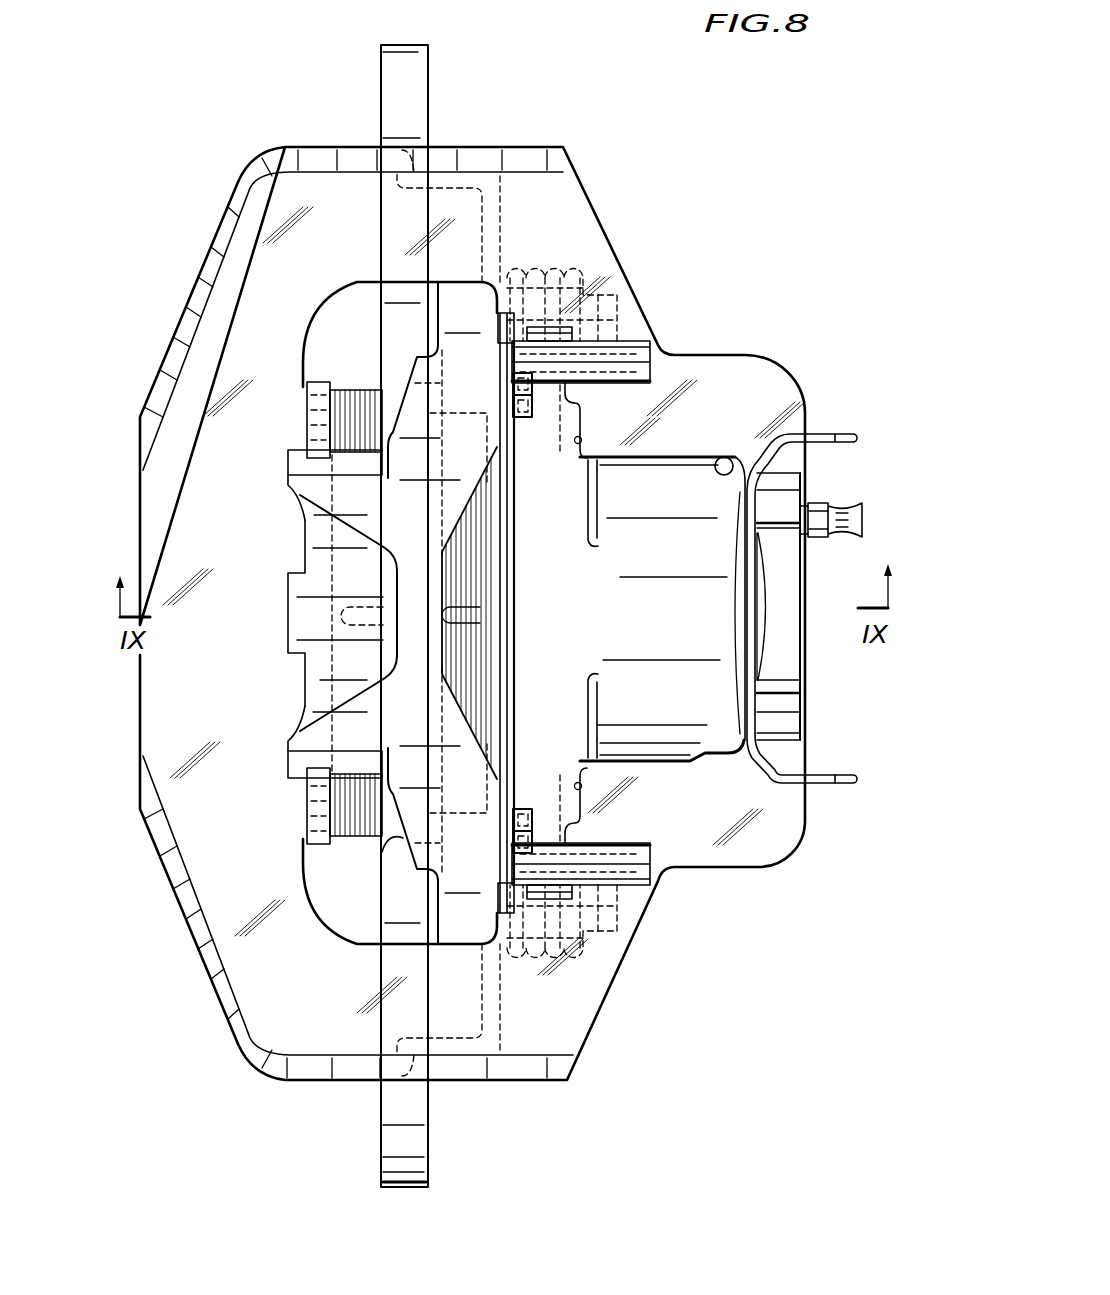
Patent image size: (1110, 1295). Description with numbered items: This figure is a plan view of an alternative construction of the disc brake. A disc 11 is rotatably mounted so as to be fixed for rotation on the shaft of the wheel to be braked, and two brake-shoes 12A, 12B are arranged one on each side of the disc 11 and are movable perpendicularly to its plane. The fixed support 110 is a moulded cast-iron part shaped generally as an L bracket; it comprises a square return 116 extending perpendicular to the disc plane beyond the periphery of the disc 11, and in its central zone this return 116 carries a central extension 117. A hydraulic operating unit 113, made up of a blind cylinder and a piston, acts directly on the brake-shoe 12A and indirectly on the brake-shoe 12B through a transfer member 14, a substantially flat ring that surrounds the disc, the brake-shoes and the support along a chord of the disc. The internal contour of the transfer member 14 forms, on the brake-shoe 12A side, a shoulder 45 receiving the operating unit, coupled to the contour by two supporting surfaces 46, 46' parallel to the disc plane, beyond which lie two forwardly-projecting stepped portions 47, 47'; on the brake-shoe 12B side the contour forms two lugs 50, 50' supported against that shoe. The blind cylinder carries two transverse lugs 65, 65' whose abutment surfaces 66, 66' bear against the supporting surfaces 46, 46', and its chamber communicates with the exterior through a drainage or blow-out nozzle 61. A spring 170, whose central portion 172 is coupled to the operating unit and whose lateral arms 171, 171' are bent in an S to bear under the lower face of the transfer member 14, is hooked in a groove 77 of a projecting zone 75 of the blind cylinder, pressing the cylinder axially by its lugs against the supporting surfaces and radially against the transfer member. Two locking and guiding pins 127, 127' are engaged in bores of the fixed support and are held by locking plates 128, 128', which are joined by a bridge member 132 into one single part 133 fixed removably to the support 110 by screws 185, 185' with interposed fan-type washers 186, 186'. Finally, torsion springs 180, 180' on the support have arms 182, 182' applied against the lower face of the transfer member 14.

The transfer member 14 is at (337, 146).
The disc 11 is at (380, 1123).
The brake-shoe 12B is at (354, 376).
The brake-shoe 12A is at (495, 600).
The arm of torsion spring 182 is at (448, 197).
The arm of torsion spring 182' is at (463, 1054).
The lug 50 is at (321, 393).
The lug 50' is at (310, 810).
The square return 116 is at (316, 573).
The central extension 117 is at (312, 532).
The bridge member 132 is at (516, 650).
The single part 133 is at (530, 565).
The locking and guiding pin 127 is at (609, 343).
The locking and guiding pin 127' is at (613, 890).
The locking plate 128 is at (520, 281).
The locking plate 128' is at (531, 953).
The transverse lug 65 is at (598, 302).
The transverse lug 65' is at (599, 929).
The torsion spring 180 is at (580, 280).
The torsion spring 180' is at (582, 952).
The fan-type washer 186 is at (487, 377).
The screw 185 is at (487, 402).
The fan-type washer 186' is at (493, 845).
The screw 185' is at (493, 848).
The abutment surface 66 is at (604, 420).
The supporting surface 46 is at (610, 429).
The stepped portion 47 is at (545, 444).
The abutment surface 66' is at (610, 805).
The supporting surface 46' is at (616, 783).
The stepped portion 47' is at (557, 799).
The hydraulic operating unit 113 is at (689, 447).
The shoulder 45 is at (722, 458).
The spring 170 is at (817, 592).
The lateral arm 171 is at (830, 402).
The lateral arm 171' is at (850, 811).
The projecting zone 75 is at (790, 661).
The groove 77 is at (768, 625).
The central portion 172 is at (762, 602).
The drainage or blow-out nozzle 61 is at (838, 510).
The fixed support 110 is at (398, 851).